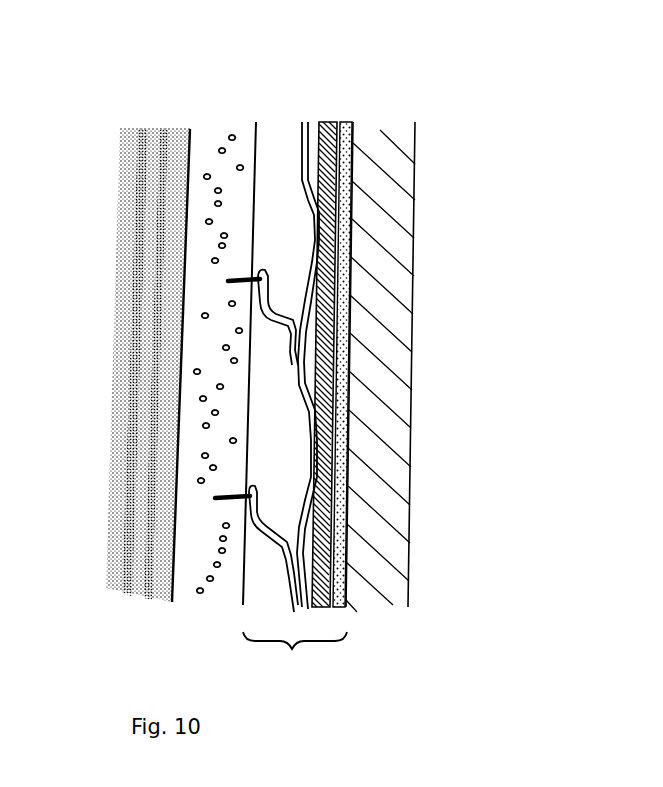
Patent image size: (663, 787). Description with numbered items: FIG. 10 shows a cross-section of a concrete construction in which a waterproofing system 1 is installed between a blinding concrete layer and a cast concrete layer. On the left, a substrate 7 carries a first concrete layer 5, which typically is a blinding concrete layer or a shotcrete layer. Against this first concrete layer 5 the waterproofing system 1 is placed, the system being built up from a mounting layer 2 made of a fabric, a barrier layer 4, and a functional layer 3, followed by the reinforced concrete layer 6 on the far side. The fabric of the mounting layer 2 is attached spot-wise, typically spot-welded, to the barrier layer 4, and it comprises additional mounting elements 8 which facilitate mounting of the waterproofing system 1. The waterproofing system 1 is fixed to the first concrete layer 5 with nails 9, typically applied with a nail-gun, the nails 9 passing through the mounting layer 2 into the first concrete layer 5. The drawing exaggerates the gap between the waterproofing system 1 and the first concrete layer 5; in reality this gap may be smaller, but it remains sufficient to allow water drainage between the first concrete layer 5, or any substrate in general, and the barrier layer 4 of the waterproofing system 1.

The waterproofing system 1 is at (295, 660).
The mounting layer 2 is at (307, 123).
The functional layer 3 is at (347, 120).
The barrier layer 4 is at (328, 120).
The first concrete layer 5 is at (220, 117).
The reinforced concrete layer 6 is at (392, 269).
The substrate 7 is at (128, 245).
The mounting elements 8 is at (272, 538).
The nails 9 is at (213, 503).